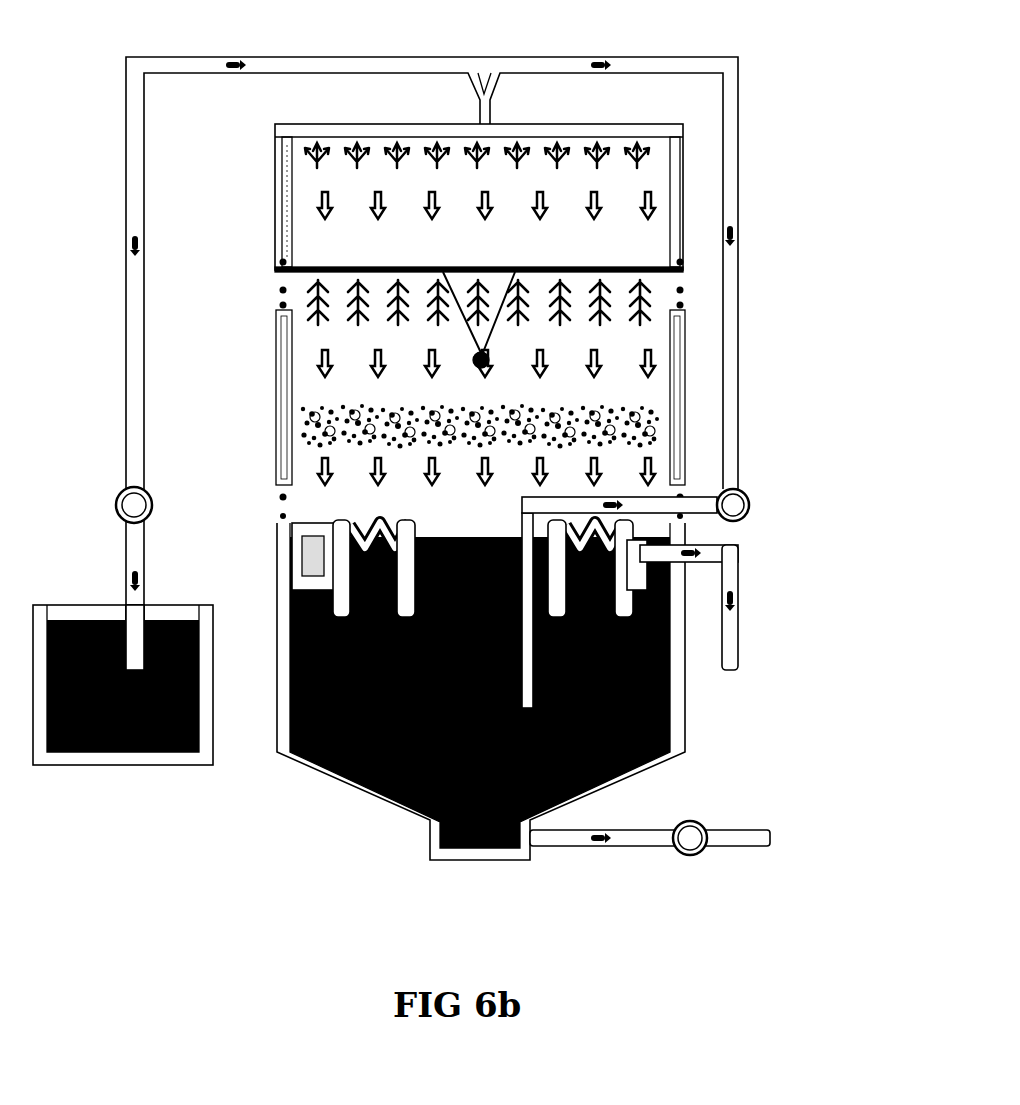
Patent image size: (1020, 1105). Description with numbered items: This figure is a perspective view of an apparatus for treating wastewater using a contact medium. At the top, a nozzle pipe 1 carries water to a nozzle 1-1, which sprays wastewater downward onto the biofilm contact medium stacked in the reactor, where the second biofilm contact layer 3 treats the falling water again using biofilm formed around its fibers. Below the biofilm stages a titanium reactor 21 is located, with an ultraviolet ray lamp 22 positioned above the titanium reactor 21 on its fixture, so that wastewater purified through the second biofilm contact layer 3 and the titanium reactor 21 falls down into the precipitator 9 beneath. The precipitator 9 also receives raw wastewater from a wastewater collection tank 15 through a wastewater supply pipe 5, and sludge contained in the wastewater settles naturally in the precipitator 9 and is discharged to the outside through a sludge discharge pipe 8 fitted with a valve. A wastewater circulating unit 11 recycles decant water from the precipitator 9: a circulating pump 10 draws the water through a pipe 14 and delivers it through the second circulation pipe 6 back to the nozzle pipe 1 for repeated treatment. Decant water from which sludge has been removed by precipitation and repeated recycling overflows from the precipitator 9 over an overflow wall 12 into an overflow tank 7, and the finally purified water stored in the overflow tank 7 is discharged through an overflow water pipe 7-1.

The nozzle pipe 1 is at (583, 127).
The nozzle 1-1 is at (605, 142).
The second biofilm contact layer 3 is at (292, 300).
The titanium reactor 21 is at (478, 360).
The ultraviolet ray lamp 22 is at (290, 418).
The precipitator 9 is at (280, 730).
The overflow tank 7 is at (300, 550).
The overflow wall 12 is at (340, 523).
The wastewater circulating unit 11 is at (778, 400).
The overflow water pipe 7-1 is at (738, 635).
The recirculation pipe 14 is at (640, 500).
The circulating pump 10 is at (750, 494).
The second circulation pipe 6 is at (737, 370).
The wastewater supply pipe 5 is at (130, 410).
The wastewater collection tank 15 is at (118, 765).
The sludge discharge pipe 8 is at (628, 848).